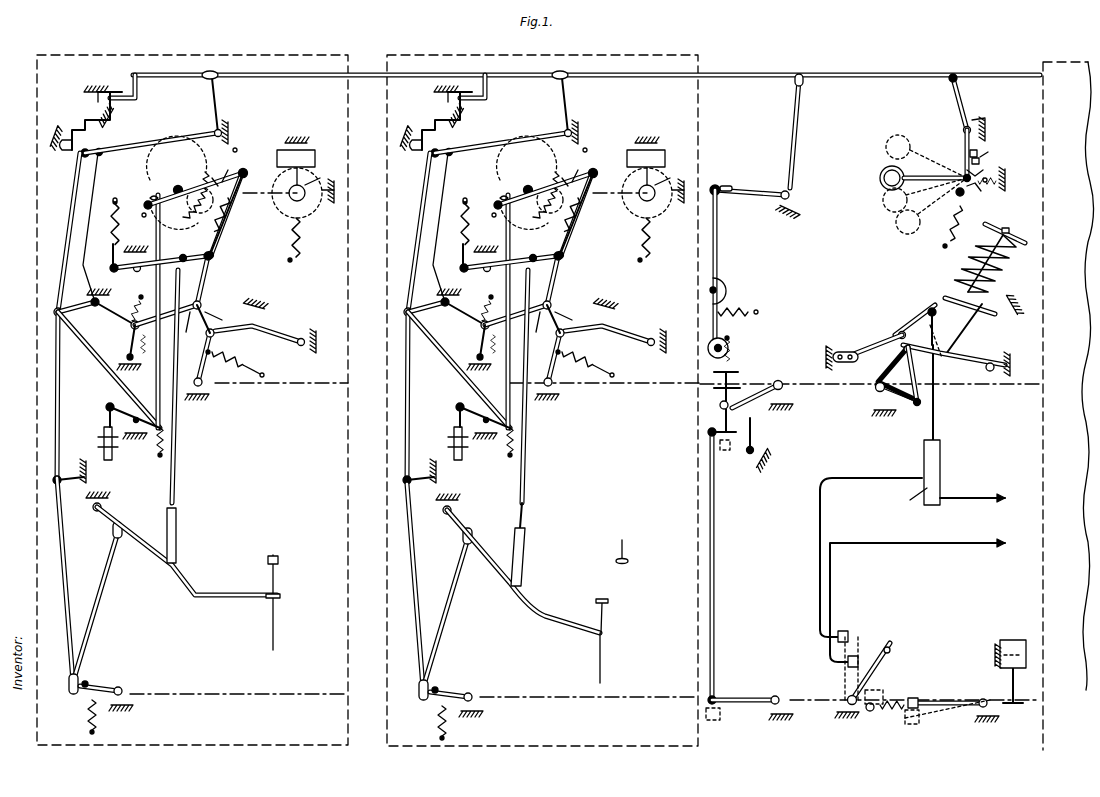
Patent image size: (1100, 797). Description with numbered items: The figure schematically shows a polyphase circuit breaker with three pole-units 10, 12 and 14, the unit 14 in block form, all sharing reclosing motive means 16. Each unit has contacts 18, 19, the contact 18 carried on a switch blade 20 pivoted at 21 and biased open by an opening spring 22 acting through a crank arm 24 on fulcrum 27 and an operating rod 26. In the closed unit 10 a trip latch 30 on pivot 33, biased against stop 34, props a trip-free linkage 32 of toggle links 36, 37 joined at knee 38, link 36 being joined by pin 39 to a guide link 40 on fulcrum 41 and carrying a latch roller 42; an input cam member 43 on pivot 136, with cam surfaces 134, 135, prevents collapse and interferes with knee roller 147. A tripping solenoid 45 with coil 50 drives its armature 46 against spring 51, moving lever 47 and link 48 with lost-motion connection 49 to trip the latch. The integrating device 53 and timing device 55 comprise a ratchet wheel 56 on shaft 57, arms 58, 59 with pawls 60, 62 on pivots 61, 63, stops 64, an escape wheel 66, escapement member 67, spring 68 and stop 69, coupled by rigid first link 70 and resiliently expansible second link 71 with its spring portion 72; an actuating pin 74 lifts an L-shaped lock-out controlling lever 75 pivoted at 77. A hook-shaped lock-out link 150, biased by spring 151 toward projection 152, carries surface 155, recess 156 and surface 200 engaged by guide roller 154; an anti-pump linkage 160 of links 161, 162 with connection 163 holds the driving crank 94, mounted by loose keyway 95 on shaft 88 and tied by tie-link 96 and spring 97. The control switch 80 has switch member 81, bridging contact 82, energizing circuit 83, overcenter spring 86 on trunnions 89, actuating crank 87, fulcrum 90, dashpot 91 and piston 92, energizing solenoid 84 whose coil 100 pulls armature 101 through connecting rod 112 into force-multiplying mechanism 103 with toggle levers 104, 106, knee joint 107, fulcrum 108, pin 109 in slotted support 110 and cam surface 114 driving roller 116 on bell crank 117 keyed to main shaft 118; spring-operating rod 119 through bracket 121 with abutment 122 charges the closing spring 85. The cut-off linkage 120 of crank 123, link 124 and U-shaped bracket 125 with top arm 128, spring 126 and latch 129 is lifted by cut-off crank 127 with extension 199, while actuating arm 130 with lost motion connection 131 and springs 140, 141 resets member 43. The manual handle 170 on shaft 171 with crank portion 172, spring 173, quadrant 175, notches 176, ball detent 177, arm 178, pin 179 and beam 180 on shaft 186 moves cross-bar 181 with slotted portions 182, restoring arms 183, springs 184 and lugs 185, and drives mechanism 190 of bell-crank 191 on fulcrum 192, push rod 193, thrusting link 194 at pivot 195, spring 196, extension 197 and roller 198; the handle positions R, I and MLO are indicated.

The pole-unit 10 is at (37, 436).
The pole-unit 12 is at (387, 436).
The pole-unit 14 is at (1042, 450).
The motive means 16 is at (888, 428).
The movable contact 18 is at (280, 570).
The contact 19 is at (278, 556).
The movable switch blade 20 is at (220, 597).
The pivot 21 is at (96, 512).
The opening spring 22 is at (112, 247).
The crank arm 24 is at (170, 260).
The operating rod 26 is at (176, 475).
The fixed fulcrum 27 is at (138, 272).
The trip latch 30 is at (80, 310).
The trip-free linkage 32 is at (221, 290).
The fixed pivot 33 is at (96, 306).
The stop 34 is at (112, 310).
The toggle link 36 is at (172, 312).
The toggle link 37 is at (205, 270).
The knee 38 is at (200, 310).
The pivot pin 39 is at (141, 308).
The guide link 40 is at (125, 350).
The fixed fulcrum 41 is at (130, 370).
The latch roller 42 is at (130, 330).
The input cam member 43 is at (269, 358).
The tripping solenoid 45 is at (135, 397).
The armature 46 is at (108, 416).
The pivoted lever 47 is at (112, 403).
The link 48 is at (98, 365).
The lost-motion connection 49 is at (56, 318).
The operating coil 50 is at (112, 452).
The calibrated spring 51 is at (165, 440).
The integrating device 53 is at (174, 223).
The timing device 55 is at (282, 205).
The ratchet wheel 56 is at (188, 170).
The central shaft 57 is at (178, 185).
The arm 58 is at (195, 194).
The arm 59 is at (213, 169).
The trip-controlling pawl 60 is at (150, 197).
The pivot 61 is at (143, 205).
The advancing pawl 62 is at (238, 177).
The pivot 63 is at (243, 168).
The stops 64 is at (175, 183).
The escape wheel 66 is at (323, 173).
The oscillatory mass escapement member 67 is at (315, 155).
The tension spring 68 is at (290, 240).
The stop 69 is at (331, 198).
The first link 70 is at (155, 237).
The second link 71 is at (230, 212).
The spring 72 is at (224, 219).
The actuating pin 74 is at (200, 201).
The lock-out controlling lever 75 is at (215, 100).
The pivot 77 is at (214, 130).
The control switch 80 is at (871, 659).
The switch member 81 is at (878, 668).
The bridging contact 82 is at (858, 660).
The energizing circuit 83 is at (822, 572).
The spring-charging solenoid 84 is at (972, 482).
The stored-energy closing device 85 is at (992, 270).
The overcenter compression spring 86 is at (895, 710).
The actuating crank 87 is at (942, 698).
The actuating shaft 88 is at (300, 692).
The trunnions 89 is at (868, 712).
The fulcrum 90 is at (845, 702).
The fluid dashpot 91 is at (1018, 680).
The piston 92 is at (1014, 640).
The driving crank 94 is at (105, 684).
The loose keyway 95 is at (120, 687).
The tie-link 96 is at (103, 612).
The spring 97 is at (88, 710).
The coil 100 is at (910, 502).
The solenoid armature 101 is at (922, 452).
The force-multiplying mechanism 103 is at (916, 331).
The toggle lever 104 is at (975, 356).
The toggle lever 106 is at (870, 345).
The knee joint 107 is at (898, 330).
The stationary fulcrum 108 is at (990, 372).
The shiftable pivot pin 109 is at (840, 350).
The slotted support 110 is at (838, 362).
The connecting rod 112 is at (936, 318).
The cam surface 114 is at (914, 380).
The roller 116 is at (885, 362).
The bell crank 117 is at (885, 392).
The main operating shaft 118 is at (268, 386).
The spring-operating rod 119 is at (956, 292).
The switch cut-off linkage 120 is at (724, 566).
The fixed bracket 121 is at (962, 330).
The abutment 122 is at (1020, 230).
The crank 123 is at (732, 706).
The link 124 is at (714, 572).
The U-shaped actuating bracket 125 is at (712, 405).
The tension spring 126 is at (735, 352).
The cut-off crank 127 is at (776, 378).
The top arm 128 is at (740, 372).
The latch 129 is at (752, 432).
The actuating arm 130 is at (214, 348).
The lost motion connection 131 is at (206, 386).
The upper cam surface 134 is at (228, 318).
The lower cam surface 135 is at (278, 316).
The fixed pivot 136 is at (305, 332).
The auxiliary resetting spring 140 is at (245, 302).
The auxiliary resetting spring 141 is at (237, 358).
The roller 147 is at (191, 331).
The lock-out link 150 is at (68, 213).
The spring 151 is at (55, 144).
The projection 152 is at (112, 125).
The guide roller 154 is at (92, 150).
The inwardly projecting surface 155 is at (82, 180).
The recess 156 is at (62, 140).
The anti-pump linkage 160 is at (60, 471).
The upper link 161 is at (58, 395).
The lower link 162 is at (64, 597).
The connection 163 is at (66, 688).
The manually-operable handle 170 is at (922, 175).
The shaft 171 is at (963, 174).
The crank portion 172 is at (968, 200).
The tension spring 173 is at (955, 228).
The quadrant 175 is at (990, 168).
The detent notches 176 is at (985, 190).
The ball detent 177 is at (1005, 192).
The operating arm 178 is at (968, 156).
The pin 179 is at (996, 148).
The beam 180 is at (962, 100).
The cross-bar 181 is at (300, 80).
The slotted portion 182 is at (213, 70).
The restoring arm 183 is at (128, 100).
The spring 184 is at (85, 92).
The lug 185 is at (112, 92).
The central shaft 186 is at (962, 128).
The manually-controlled actuating mechanism 190 is at (728, 203).
The bell-crank 191 is at (770, 180).
The fixed fulcrum 192 is at (790, 192).
The push rod 193 is at (718, 240).
The thrusting link 194 is at (712, 318).
The pivot 195 is at (712, 280).
The tension spring 196 is at (745, 305).
The extension 197 is at (724, 280).
The roller 198 is at (721, 337).
The cam-like extension 199 is at (712, 385).
The surface 200 is at (85, 115).
The reset position R is at (895, 135).
The intermediate position I is at (885, 208).
The manual lock-out position MLO is at (905, 234).